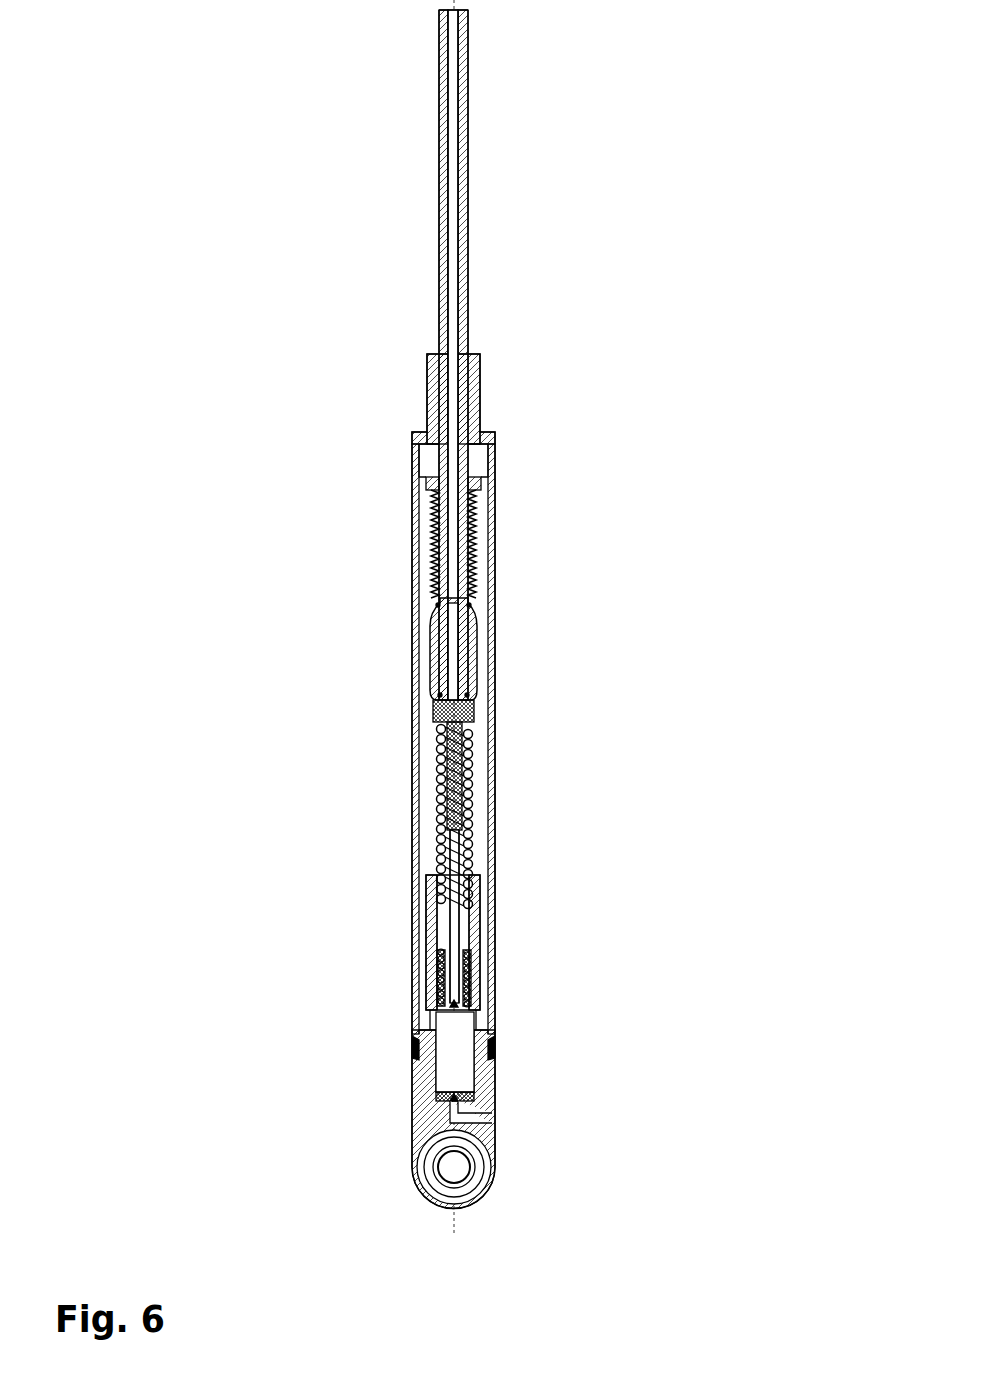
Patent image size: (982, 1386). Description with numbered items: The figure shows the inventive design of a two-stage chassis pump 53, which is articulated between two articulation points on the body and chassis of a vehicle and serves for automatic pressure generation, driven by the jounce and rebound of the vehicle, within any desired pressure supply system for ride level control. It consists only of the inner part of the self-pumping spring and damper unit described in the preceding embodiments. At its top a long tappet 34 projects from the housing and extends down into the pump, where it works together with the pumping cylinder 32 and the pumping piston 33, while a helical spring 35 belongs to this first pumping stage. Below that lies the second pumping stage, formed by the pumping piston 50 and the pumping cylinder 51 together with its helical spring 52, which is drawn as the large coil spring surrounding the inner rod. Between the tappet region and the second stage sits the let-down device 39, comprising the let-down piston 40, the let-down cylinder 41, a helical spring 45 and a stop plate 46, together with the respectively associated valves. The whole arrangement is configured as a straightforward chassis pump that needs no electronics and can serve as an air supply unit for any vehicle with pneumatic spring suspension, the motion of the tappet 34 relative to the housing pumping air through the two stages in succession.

The tappet 34 is at (439, 159).
The two-stage chassis pump 53 is at (596, 484).
The let-down device 39 is at (644, 599).
The let-down piston 40 is at (644, 599).
The let-down cylinder 41 is at (644, 599).
The helical spring 45 is at (644, 599).
The stop plate 46 is at (515, 647).
The pumping piston 50 is at (646, 819).
The pumping cylinder 51 is at (646, 819).
The helical spring 52 is at (515, 796).
The pumping cylinder 32 is at (637, 898).
The pumping piston 33 is at (637, 898).
The helical spring 35 is at (515, 931).